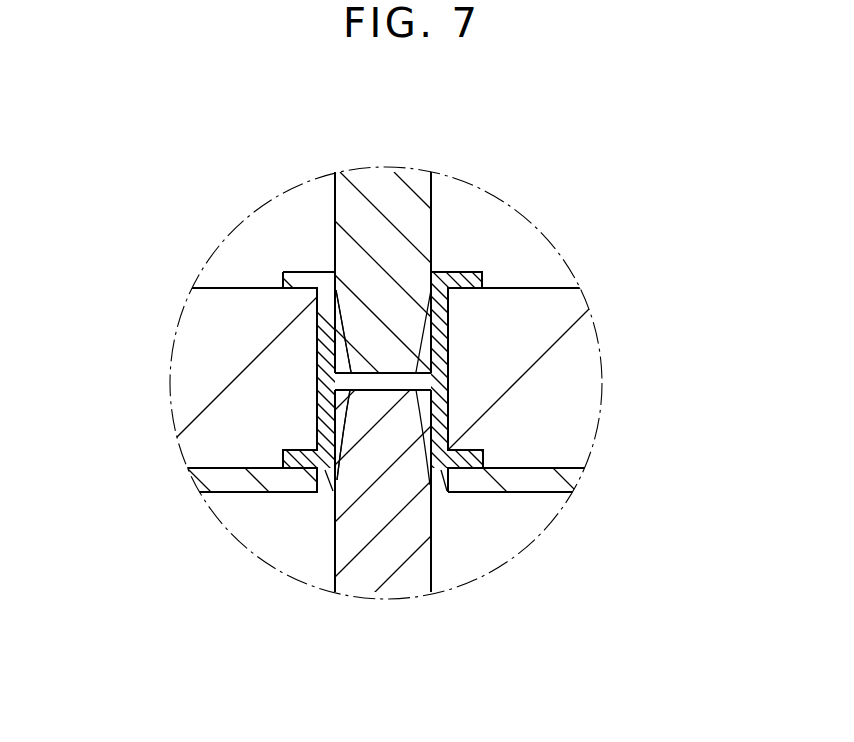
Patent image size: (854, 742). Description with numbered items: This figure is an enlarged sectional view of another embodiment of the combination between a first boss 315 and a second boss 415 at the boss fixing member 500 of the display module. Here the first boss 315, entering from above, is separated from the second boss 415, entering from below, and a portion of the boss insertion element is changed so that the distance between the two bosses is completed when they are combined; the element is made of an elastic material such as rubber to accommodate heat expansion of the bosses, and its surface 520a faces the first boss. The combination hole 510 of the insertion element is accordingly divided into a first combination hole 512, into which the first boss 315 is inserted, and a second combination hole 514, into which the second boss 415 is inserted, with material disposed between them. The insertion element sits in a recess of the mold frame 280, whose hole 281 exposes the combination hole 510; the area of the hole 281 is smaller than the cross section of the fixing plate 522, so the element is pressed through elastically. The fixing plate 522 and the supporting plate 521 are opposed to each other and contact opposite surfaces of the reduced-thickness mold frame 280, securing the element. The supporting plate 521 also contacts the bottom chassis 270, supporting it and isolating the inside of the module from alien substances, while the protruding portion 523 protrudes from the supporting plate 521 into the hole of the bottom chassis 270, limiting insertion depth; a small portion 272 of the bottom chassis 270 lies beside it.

The first boss 315 is at (380, 172).
The second boss 415 is at (383, 593).
The boss fixing member 500 is at (489, 279).
The bearing body surface 520a is at (455, 248).
The fixing plate 522 is at (463, 278).
The supporting plate 521 is at (463, 456).
The hole 281 is at (448, 322).
The mold frame 280 is at (578, 367).
The bottom chassis 270 is at (557, 482).
The lower plate protrusion 272 is at (324, 488).
The protruding portion 523 is at (445, 483).
The combination hole 510 is at (78, 322).
The first combination hole 512 is at (340, 340).
The second combination hole 514 is at (337, 426).